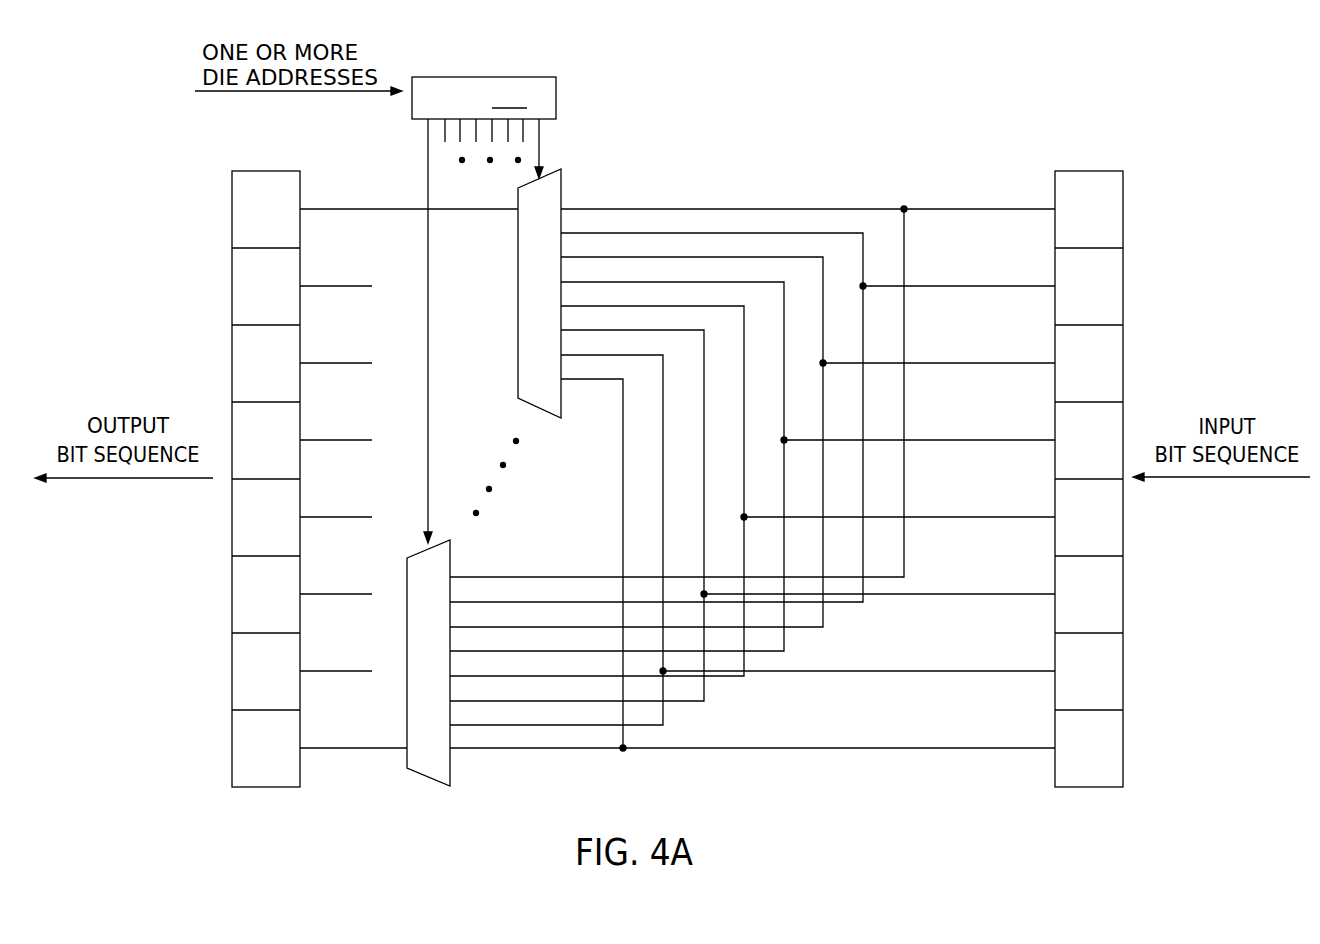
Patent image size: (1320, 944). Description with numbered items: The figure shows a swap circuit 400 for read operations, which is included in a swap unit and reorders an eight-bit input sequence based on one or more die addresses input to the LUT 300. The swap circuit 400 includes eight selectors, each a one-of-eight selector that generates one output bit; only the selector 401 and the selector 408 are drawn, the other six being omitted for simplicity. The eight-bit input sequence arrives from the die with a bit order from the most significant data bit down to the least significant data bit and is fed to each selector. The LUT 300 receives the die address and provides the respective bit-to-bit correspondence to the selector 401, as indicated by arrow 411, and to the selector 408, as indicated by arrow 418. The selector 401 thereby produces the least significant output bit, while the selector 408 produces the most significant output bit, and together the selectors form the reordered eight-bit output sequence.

The LUT 300 is at (484, 120).
The swap circuit 400 is at (793, 172).
The selector 401 is at (505, 290).
The selector 408 is at (458, 560).
The arrow 411 is at (560, 141).
The arrow 418 is at (412, 163).